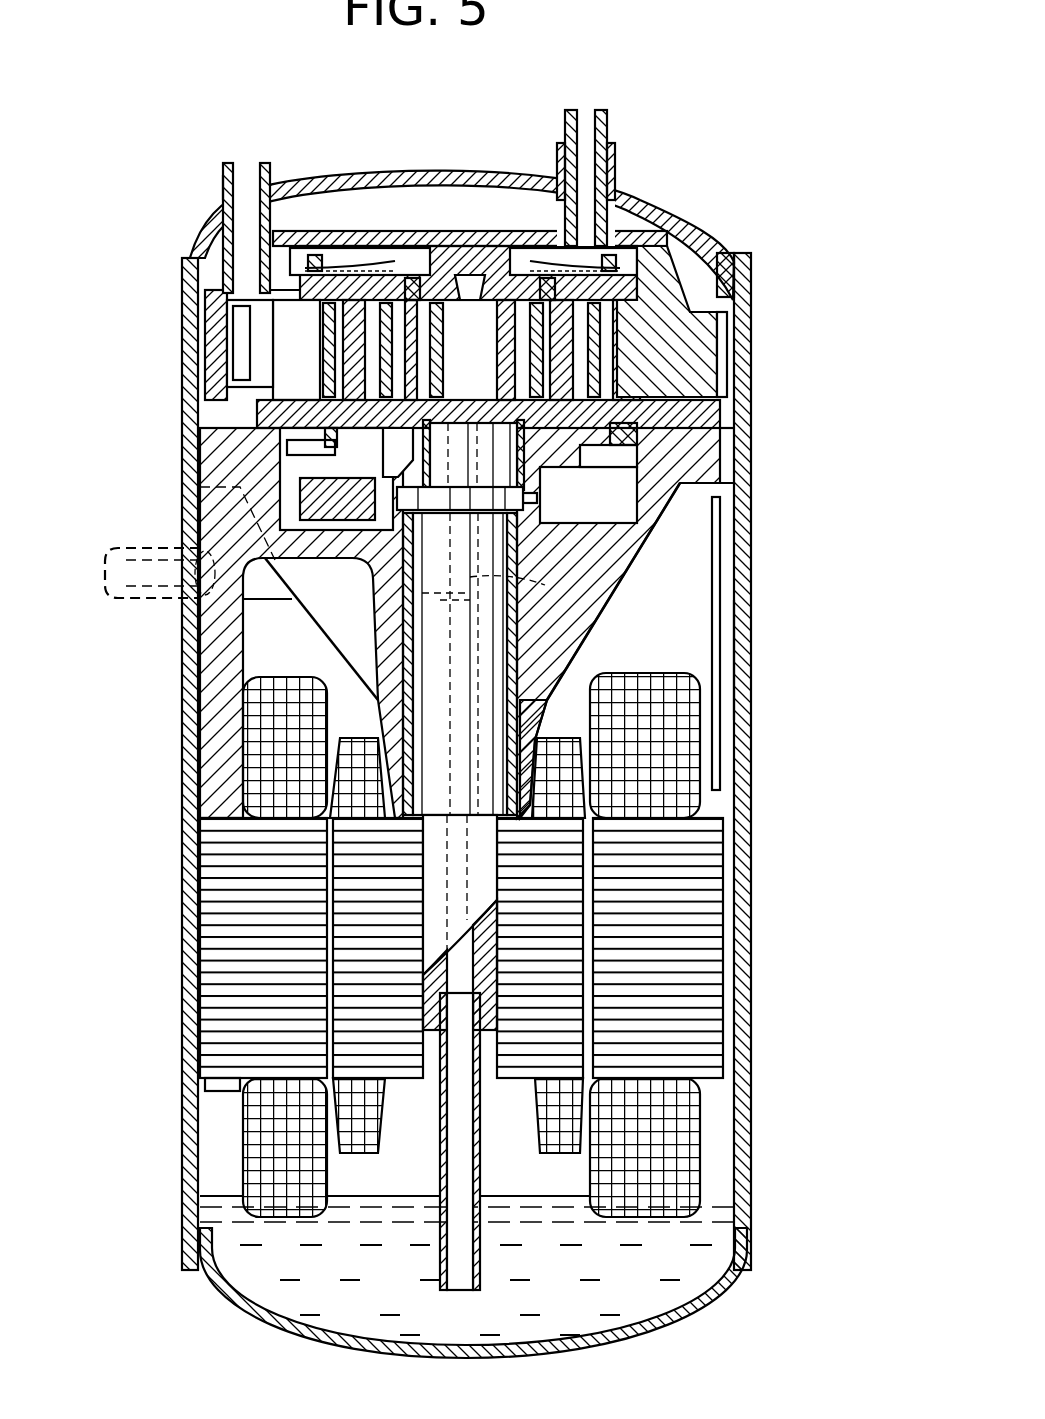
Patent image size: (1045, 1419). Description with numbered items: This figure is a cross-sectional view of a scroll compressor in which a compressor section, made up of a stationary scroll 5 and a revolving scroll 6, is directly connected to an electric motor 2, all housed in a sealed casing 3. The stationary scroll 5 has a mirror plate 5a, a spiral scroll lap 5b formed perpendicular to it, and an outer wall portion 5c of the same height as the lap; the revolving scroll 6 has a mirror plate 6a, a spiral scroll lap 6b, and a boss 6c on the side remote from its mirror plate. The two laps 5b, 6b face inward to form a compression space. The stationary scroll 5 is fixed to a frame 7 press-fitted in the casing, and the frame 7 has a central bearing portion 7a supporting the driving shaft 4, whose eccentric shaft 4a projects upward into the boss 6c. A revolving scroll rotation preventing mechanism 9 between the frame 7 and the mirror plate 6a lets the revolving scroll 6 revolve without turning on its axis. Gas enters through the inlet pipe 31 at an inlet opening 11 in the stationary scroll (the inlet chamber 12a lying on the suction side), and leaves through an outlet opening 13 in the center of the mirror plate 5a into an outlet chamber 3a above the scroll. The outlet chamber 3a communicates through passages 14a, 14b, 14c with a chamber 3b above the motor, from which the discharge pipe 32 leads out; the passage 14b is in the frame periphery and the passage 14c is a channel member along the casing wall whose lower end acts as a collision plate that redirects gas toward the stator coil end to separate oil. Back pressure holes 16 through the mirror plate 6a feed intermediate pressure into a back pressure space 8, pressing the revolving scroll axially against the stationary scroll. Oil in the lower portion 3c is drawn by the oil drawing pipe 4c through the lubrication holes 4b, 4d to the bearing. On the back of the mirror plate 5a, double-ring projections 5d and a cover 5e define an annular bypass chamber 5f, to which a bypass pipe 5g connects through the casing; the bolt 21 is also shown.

The electric motor 2 is at (702, 972).
The sealed casing 3 is at (638, 200).
The outlet chamber 3a is at (383, 205).
The chamber 3b is at (692, 650).
The lower portion of the sealed casing 3c is at (672, 1275).
The driving shaft 4 is at (415, 635).
The eccentric shaft 4a is at (372, 580).
The lubrication hole 4b is at (487, 882).
The oil drawing pipe 4c is at (482, 1172).
The lubrication hole 4d is at (546, 572).
The stationary scroll 5 is at (698, 280).
The mirror plate 5a is at (447, 285).
The spiral scroll lap 5b is at (495, 350).
The outer wall portion 5c is at (705, 355).
The projections 5d is at (650, 260).
The cover 5e is at (307, 237).
The bypass chamber 5f is at (352, 262).
The bypass pipe 5g is at (607, 135).
The revolving scroll 6 is at (700, 440).
The mirror plate 6a is at (722, 392).
The spiral scroll lap 6b is at (442, 352).
The boss 6c is at (528, 500).
The frame 7 is at (670, 505).
The bearing portion 7a is at (548, 640).
The back pressure space 8 is at (645, 560).
The revolving scroll rotation preventing mechanism 9 is at (300, 455).
The inlet opening 11 is at (240, 330).
The inlet chamber 12a is at (245, 358).
The outlet opening 13 is at (470, 290).
The passage 14a is at (720, 310).
The passage 14b is at (732, 422).
The passage 14c is at (728, 613).
The back pressure holes 16 is at (388, 440).
The valve bolt 21 is at (410, 290).
The inlet pipe 31 is at (226, 192).
The discharge pipe 32 is at (130, 600).